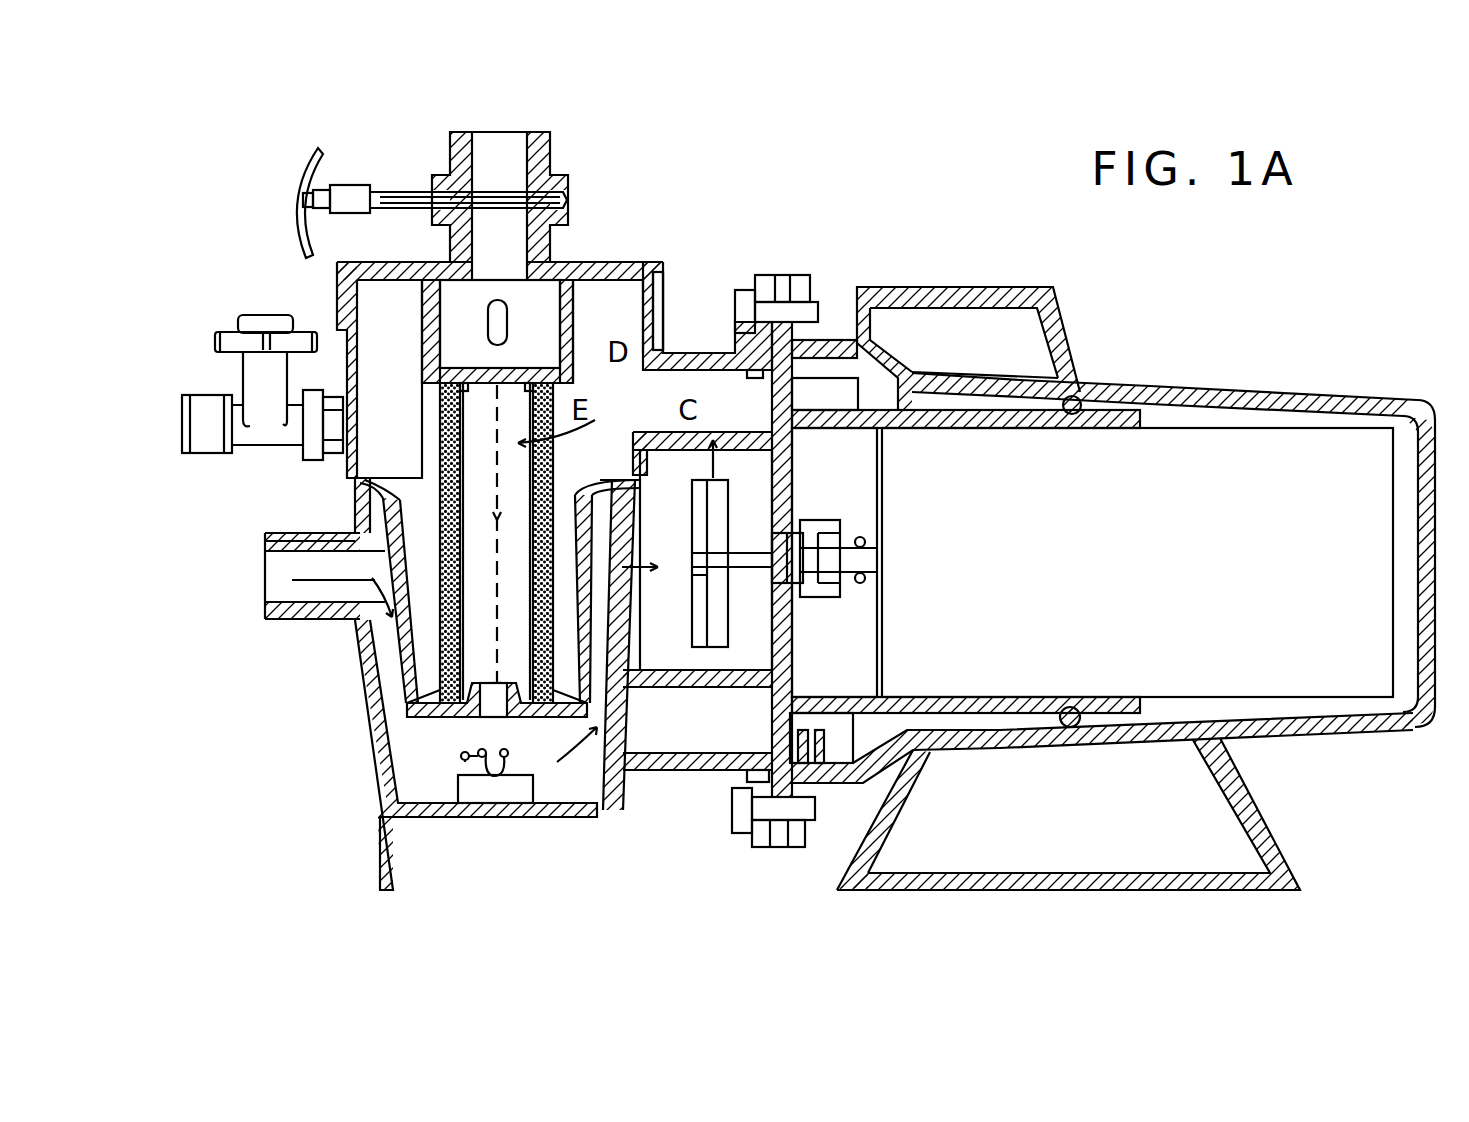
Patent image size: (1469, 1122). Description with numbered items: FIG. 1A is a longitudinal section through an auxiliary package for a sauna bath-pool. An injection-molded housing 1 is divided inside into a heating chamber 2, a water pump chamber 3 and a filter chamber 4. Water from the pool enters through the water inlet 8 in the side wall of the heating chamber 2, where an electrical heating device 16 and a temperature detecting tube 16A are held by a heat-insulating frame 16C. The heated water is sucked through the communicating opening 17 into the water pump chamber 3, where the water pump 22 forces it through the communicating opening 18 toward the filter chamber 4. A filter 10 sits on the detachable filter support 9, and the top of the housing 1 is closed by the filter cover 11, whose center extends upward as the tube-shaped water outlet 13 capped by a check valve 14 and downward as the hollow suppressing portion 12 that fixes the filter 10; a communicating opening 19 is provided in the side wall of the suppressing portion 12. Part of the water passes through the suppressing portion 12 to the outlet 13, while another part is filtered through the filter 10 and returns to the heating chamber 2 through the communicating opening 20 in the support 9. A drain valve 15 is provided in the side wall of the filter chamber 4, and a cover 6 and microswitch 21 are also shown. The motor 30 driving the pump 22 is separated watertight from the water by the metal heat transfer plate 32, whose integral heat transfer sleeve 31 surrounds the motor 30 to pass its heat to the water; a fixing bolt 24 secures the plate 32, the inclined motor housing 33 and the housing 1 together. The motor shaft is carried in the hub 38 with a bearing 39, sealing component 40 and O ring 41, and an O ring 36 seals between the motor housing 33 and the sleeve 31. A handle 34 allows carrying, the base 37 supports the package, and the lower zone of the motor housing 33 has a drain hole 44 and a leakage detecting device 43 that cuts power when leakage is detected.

The housing 1 is at (597, 812).
The heating chamber 2 is at (555, 775).
The water pump chamber 3 is at (740, 660).
The filter chamber 4 is at (418, 500).
The housing cover 6 is at (648, 282).
The water inlet 8 is at (293, 595).
The filter support 9 is at (407, 712).
The filter 10 is at (445, 605).
The filter cover 11 is at (622, 252).
The suppressing portion 12 is at (430, 372).
The water outlet 13 is at (512, 250).
The check valve 14 is at (397, 200).
The drain valve 15 is at (250, 390).
The electrical heating device 16 is at (508, 742).
The temperature detecting tube 16A is at (466, 762).
The frame 16C is at (497, 790).
The communicating opening 17 is at (612, 740).
The communicating opening 18 is at (712, 450).
The communicating opening 19 is at (553, 324).
The communicating opening 20 is at (490, 712).
The microswitch 21 is at (660, 312).
The water pump 22 is at (697, 618).
The fixing bolt 24 is at (803, 300).
The motor 30 is at (1345, 450).
The heat transfer sleeve 31 is at (972, 372).
The heat transfer plate 32 is at (750, 290).
The motor housing 33 is at (1272, 398).
The handle 34 is at (1000, 288).
The O ring 36 is at (1082, 398).
The base 37 is at (1268, 828).
The hub 38 is at (835, 600).
The bearing 39 is at (832, 522).
The sealing component 40 is at (796, 533).
The O ring 41 is at (862, 536).
The leakage detecting device 43 is at (815, 770).
The drain hole 44 is at (905, 768).